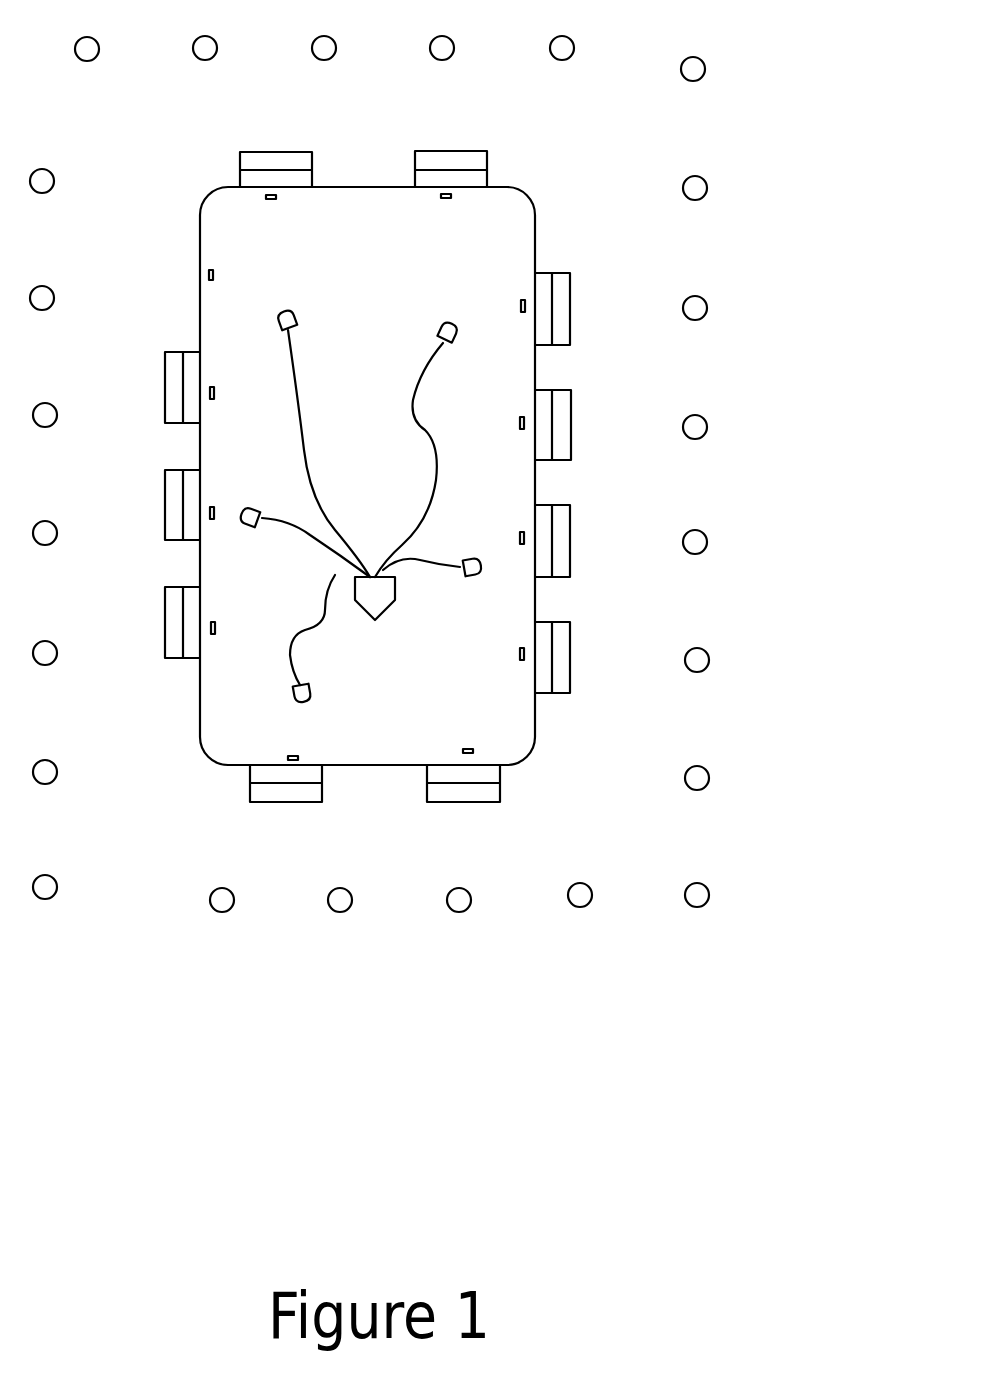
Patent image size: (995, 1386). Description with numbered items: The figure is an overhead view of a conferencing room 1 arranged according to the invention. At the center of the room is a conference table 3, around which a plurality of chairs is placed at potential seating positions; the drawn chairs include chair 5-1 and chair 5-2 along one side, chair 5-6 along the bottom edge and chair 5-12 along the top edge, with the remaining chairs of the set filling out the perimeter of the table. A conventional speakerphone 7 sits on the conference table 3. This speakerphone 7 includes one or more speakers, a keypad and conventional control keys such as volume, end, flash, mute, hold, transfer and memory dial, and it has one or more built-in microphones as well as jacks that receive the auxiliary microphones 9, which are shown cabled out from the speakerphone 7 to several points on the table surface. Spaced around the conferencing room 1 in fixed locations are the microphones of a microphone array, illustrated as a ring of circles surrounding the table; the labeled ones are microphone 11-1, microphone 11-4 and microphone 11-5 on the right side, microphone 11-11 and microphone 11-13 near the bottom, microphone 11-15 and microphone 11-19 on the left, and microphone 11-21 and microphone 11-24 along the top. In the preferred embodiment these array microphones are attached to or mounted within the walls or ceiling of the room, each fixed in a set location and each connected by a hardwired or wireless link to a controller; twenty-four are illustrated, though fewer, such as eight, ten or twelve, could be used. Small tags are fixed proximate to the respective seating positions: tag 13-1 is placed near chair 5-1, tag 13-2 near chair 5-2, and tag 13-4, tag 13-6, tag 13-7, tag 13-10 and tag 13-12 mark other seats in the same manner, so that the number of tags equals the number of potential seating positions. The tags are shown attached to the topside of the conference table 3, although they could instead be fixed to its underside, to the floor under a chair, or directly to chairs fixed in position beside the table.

The conferencing room 1 is at (632, 830).
The conference table 3 is at (380, 296).
The chair 5-1 is at (571, 290).
The chair 5-2 is at (571, 420).
The chair 5-6 is at (287, 803).
The chair 5-12 is at (470, 151).
The conventional speakerphone 7 is at (382, 598).
The auxiliary microphones 9 is at (296, 318).
The microphone 11-1 is at (700, 78).
The microphone 11-4 is at (705, 423).
The microphone 11-5 is at (705, 540).
The microphone 11-11 is at (348, 907).
The microphone 11-13 is at (55, 880).
The microphone 11-15 is at (55, 650).
The microphone 11-19 is at (50, 175).
The microphone 11-21 is at (212, 55).
The microphone 11-24 is at (570, 42).
The tag 13-1 is at (520, 306).
The tag 13-2 is at (519, 423).
The tag 13-4 is at (519, 654).
The tag 13-6 is at (295, 755).
The tag 13-7 is at (215, 627).
The tag 13-10 is at (214, 275).
The tag 13-12 is at (446, 200).